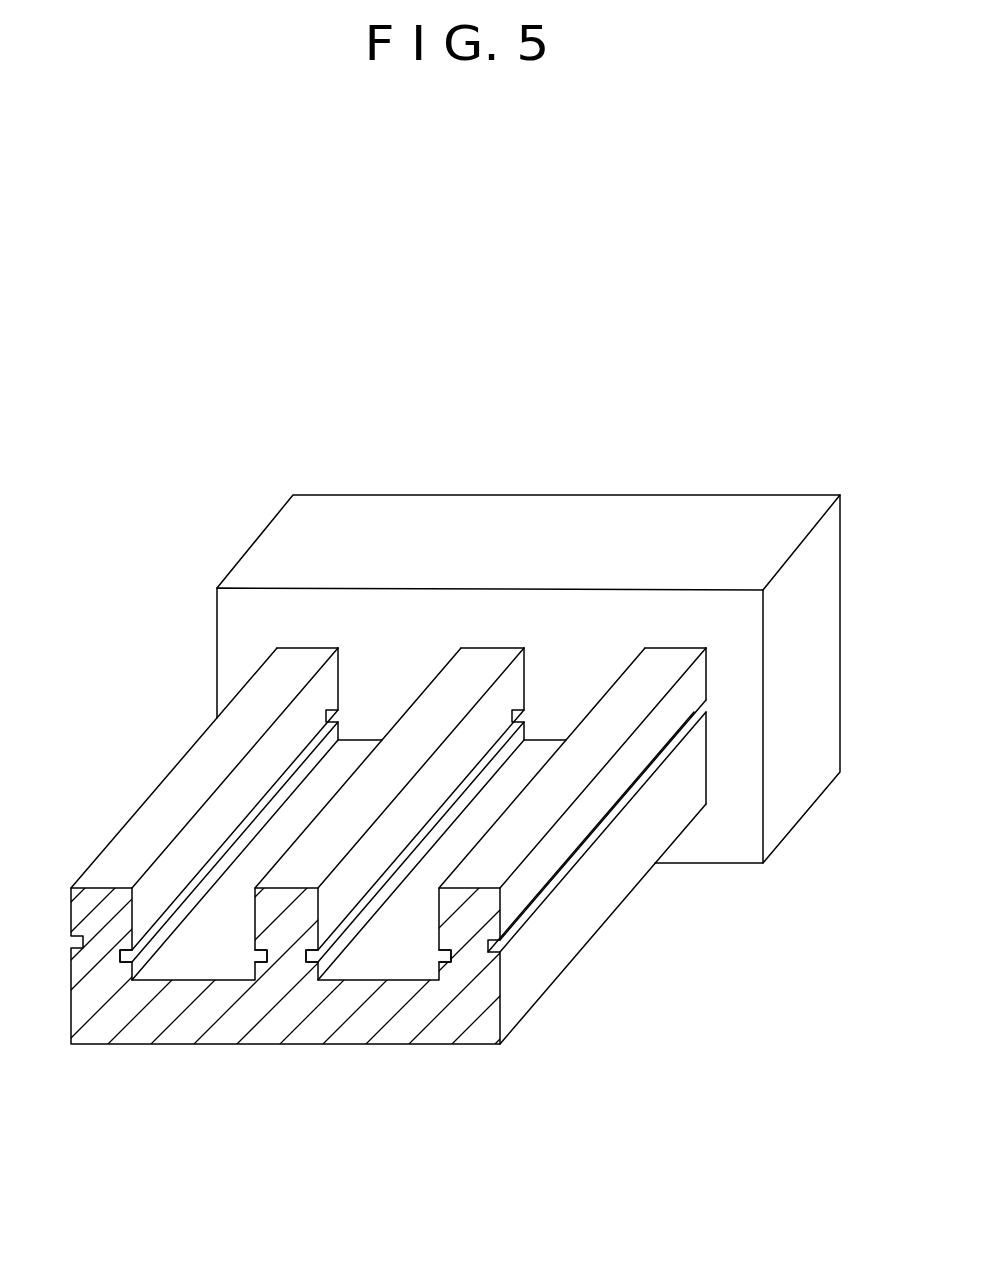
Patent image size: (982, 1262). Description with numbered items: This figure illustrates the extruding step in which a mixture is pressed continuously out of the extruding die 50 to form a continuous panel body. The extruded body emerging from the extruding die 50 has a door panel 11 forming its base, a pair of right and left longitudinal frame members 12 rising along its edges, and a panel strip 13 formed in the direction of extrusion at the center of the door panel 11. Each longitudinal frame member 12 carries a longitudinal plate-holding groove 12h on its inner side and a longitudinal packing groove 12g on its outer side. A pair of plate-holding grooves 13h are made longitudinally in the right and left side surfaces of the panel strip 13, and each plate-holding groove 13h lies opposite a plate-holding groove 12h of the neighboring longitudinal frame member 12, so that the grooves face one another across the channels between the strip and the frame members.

The extruding die 50 is at (420, 713).
The door panel 11 is at (290, 1020).
The longitudinal frame member 12 is at (146, 836).
The packing groove 12g is at (547, 888).
The plate-holding groove 12h is at (125, 958).
The panel strip 13 is at (385, 778).
The plate-holding groove 13h is at (263, 958).